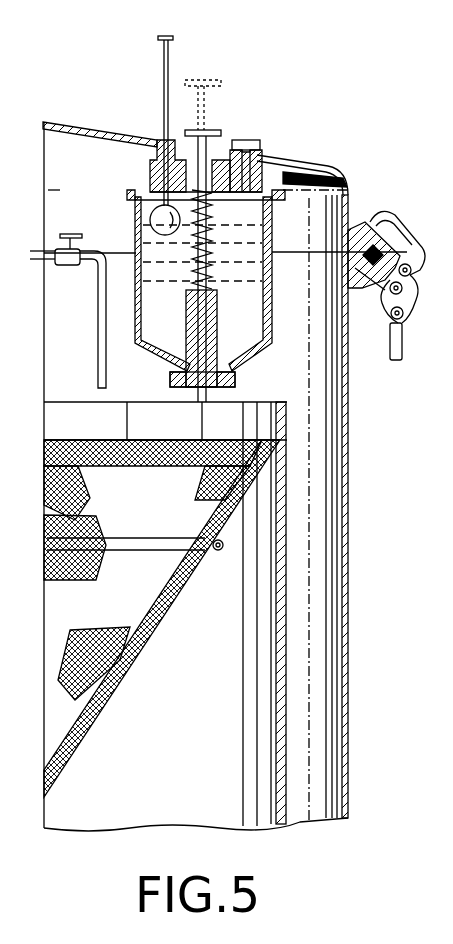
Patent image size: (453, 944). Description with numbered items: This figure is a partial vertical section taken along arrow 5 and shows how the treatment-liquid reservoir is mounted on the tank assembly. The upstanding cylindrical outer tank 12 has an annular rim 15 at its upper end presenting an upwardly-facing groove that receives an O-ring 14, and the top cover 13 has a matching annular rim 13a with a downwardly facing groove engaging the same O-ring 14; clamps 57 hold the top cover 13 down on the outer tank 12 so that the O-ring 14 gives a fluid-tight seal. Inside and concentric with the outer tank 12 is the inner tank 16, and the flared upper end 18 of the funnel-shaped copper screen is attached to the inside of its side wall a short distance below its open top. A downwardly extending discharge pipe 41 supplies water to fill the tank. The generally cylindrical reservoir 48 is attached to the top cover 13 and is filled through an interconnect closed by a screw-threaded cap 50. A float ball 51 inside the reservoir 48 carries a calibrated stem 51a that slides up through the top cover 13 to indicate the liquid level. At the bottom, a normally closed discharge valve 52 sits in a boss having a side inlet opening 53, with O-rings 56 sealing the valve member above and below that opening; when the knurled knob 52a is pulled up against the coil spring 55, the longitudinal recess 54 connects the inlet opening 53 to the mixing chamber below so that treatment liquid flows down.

The section line arrow 5 is at (407, 242).
The outer tank 12 is at (355, 545).
The top cover 13 is at (62, 126).
The annular rim 13a is at (363, 233).
The O-ring 14 is at (390, 233).
The annular rim 15 is at (362, 282).
The inner tank 16 is at (285, 668).
The flared upper end 18 is at (150, 531).
The discharge pipe 41 is at (98, 318).
The reservoir 48 is at (83, 182).
The screw-threaded cap 50 is at (260, 144).
The float ball 51 is at (157, 217).
The calibrated stem 51a is at (162, 62).
The discharge valve 52 is at (203, 320).
The knurled knob 52a is at (213, 132).
The inlet opening 53 is at (187, 353).
The longitudinal recess 54 is at (157, 160).
The coil spring 55 is at (210, 245).
The O-rings 56 is at (195, 290).
The clamps 57 is at (220, 193).